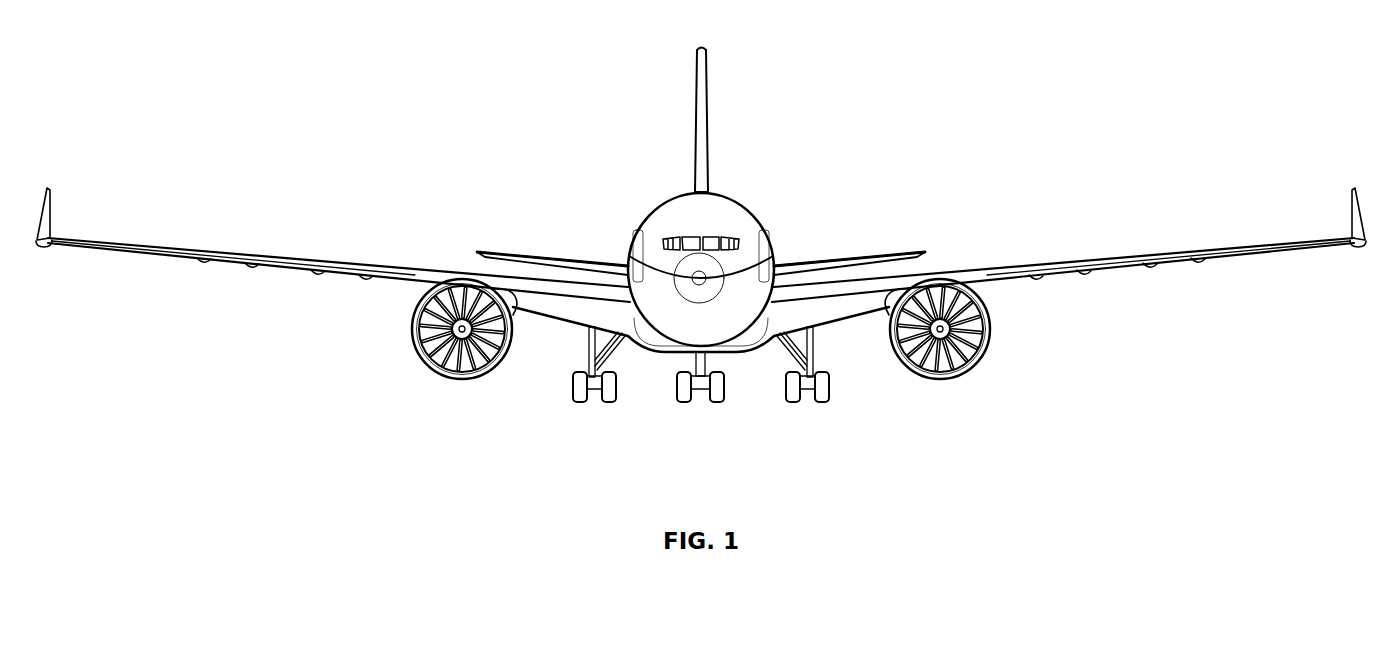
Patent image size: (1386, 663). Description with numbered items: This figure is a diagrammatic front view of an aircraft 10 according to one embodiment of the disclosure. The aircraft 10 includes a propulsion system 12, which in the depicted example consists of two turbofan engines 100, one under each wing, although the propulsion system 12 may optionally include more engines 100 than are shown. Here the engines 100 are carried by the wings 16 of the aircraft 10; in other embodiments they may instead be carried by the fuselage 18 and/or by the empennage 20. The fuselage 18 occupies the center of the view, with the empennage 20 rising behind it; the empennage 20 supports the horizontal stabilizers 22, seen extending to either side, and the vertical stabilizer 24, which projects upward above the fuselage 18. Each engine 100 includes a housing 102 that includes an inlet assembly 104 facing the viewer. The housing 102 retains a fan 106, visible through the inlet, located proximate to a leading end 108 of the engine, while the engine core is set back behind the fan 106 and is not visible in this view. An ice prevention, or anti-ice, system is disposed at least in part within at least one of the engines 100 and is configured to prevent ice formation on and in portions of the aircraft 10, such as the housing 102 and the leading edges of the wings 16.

The aircraft 10 is at (512, 88).
The propulsion system 12 is at (378, 428).
The wings 16 is at (300, 257).
The fuselage 18 is at (750, 203).
The empennage 20 is at (708, 186).
The horizontal stabilizers 22 is at (565, 259).
The vertical stabilizer 24 is at (707, 88).
The turbofan engine 100 is at (412, 326).
The housing 102 is at (505, 358).
The inlet assembly 104 is at (512, 329).
The fan 106 is at (455, 370).
The leading end 108 is at (980, 313).